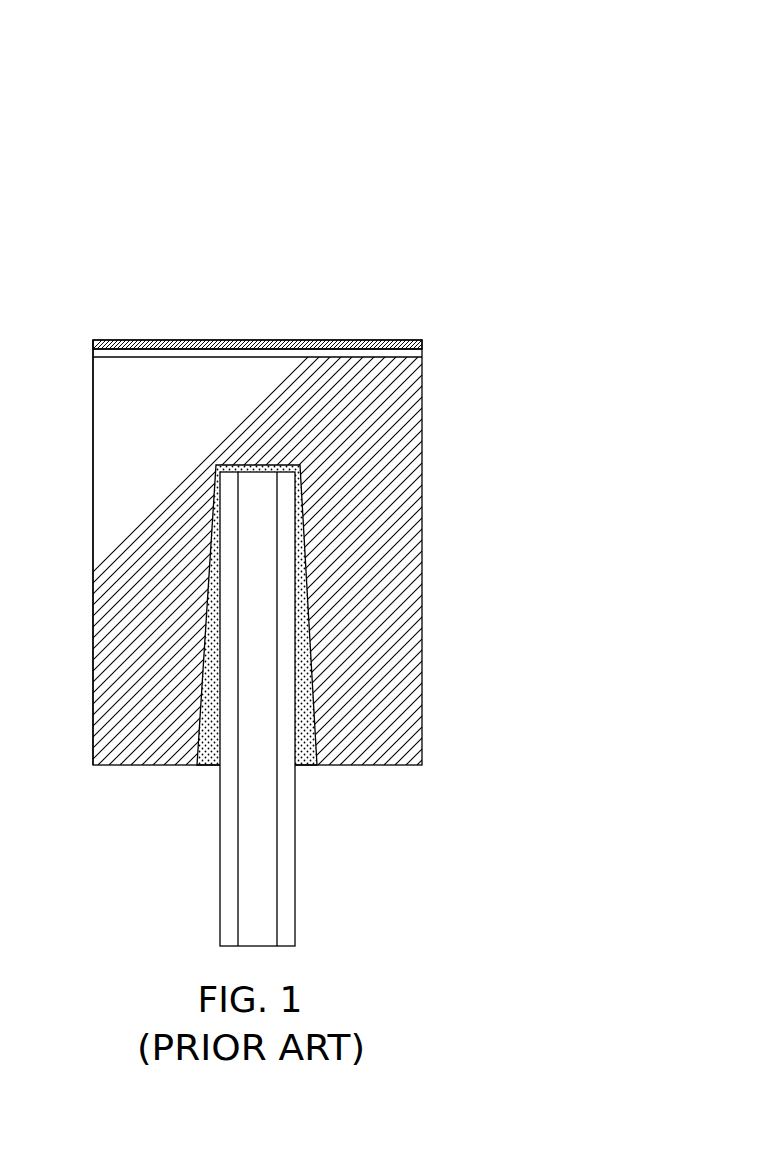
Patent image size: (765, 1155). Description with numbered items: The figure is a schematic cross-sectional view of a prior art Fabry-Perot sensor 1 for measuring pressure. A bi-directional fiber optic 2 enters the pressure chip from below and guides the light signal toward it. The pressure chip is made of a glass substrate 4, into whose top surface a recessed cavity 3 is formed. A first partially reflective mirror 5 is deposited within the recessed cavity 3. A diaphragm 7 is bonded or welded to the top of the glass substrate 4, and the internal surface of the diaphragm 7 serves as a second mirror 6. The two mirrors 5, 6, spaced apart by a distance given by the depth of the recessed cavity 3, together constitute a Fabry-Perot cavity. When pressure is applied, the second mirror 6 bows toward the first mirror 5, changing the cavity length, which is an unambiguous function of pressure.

The Fabry-Perot sensor 1 is at (262, 92).
The bi-directional fiber optic 2 is at (282, 902).
The recessed cavity 3 is at (407, 358).
The glass substrate 4 is at (408, 497).
The first partially reflective mirror 5 is at (95, 397).
The second mirror 6 is at (268, 352).
The diaphragm 7 is at (200, 339).